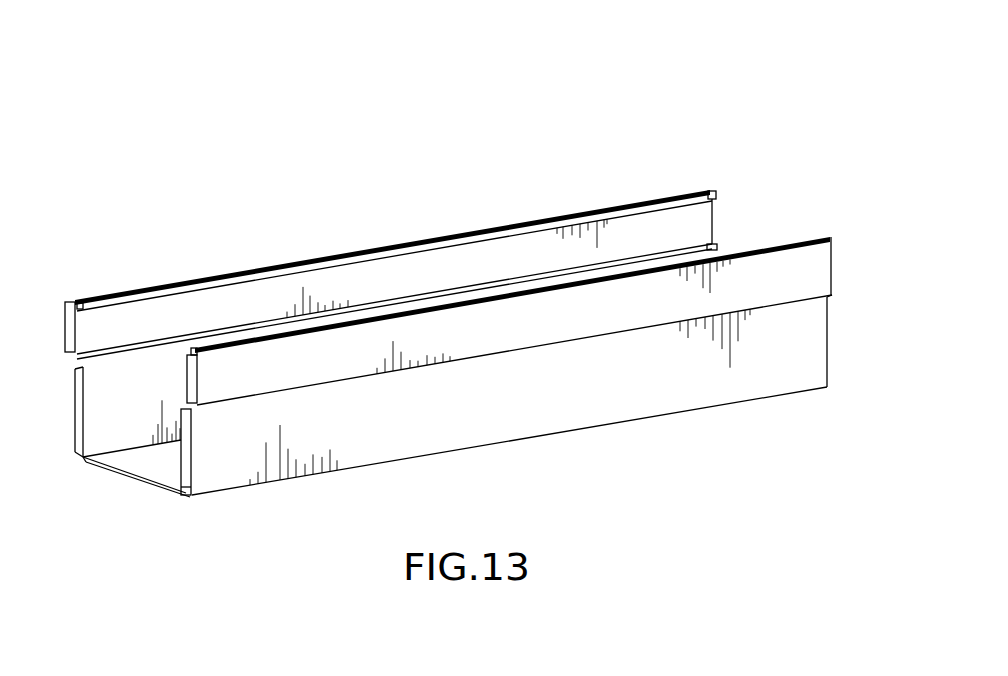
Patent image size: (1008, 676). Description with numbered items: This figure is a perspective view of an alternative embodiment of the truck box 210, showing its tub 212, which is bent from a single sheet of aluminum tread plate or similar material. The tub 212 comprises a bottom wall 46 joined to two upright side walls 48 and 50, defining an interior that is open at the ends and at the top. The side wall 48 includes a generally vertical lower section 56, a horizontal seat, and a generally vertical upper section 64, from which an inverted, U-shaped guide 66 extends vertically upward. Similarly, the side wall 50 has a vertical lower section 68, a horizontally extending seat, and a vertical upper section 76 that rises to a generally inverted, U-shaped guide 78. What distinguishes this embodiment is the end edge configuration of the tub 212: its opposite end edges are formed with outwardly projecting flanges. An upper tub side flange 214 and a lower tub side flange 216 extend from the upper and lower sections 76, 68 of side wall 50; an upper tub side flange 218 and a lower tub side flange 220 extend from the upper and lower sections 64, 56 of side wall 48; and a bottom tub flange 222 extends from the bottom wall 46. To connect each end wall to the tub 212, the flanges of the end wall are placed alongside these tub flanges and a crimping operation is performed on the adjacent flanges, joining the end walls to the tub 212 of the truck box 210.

The truck box 210 is at (536, 111).
The tub 212 is at (415, 192).
The side wall 50 is at (387, 235).
The upper section 76 is at (634, 229).
The guide 78 is at (713, 195).
The upper tub side flange 214 is at (73, 314).
The lower section 68 is at (115, 407).
The lower tub side flange 216 is at (80, 442).
The bottom wall 46 is at (157, 472).
The bottom tub flange 222 is at (162, 490).
The side wall 48 is at (580, 455).
The guide 66 is at (830, 237).
The upper section 64 is at (832, 268).
The lower section 56 is at (758, 380).
The upper tub side flange 218 is at (193, 385).
The lower tub side flange 220 is at (187, 480).